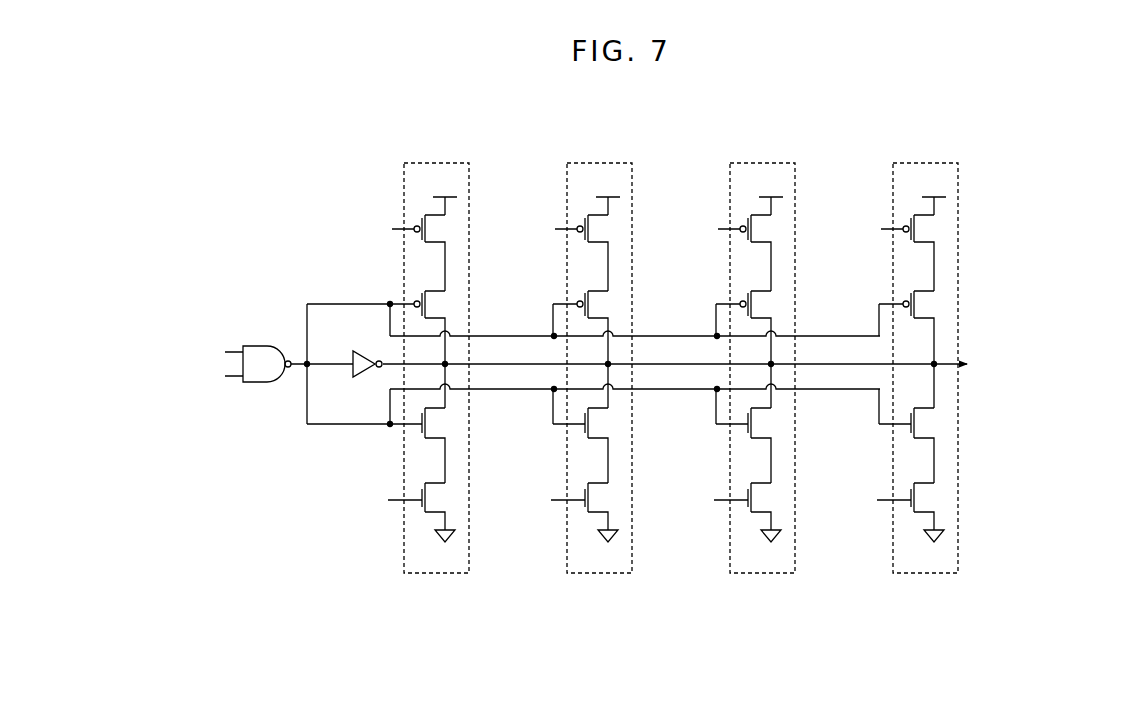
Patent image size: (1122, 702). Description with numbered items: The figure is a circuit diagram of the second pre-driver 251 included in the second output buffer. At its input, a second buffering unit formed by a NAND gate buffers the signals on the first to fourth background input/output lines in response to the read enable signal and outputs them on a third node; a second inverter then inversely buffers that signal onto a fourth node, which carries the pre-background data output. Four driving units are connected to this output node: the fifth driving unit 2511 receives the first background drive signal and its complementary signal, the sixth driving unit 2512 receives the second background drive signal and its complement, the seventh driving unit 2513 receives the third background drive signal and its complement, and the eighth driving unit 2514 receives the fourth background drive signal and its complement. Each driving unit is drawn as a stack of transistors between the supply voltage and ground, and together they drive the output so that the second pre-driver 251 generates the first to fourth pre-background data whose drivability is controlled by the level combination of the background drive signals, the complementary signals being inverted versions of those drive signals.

The second pre-driver 251 is at (285, 157).
The fifth driving unit 2511 is at (457, 162).
The sixth driving unit 2512 is at (572, 349).
The seventh driving unit 2513 is at (735, 349).
The eighth driving unit 2514 is at (898, 349).